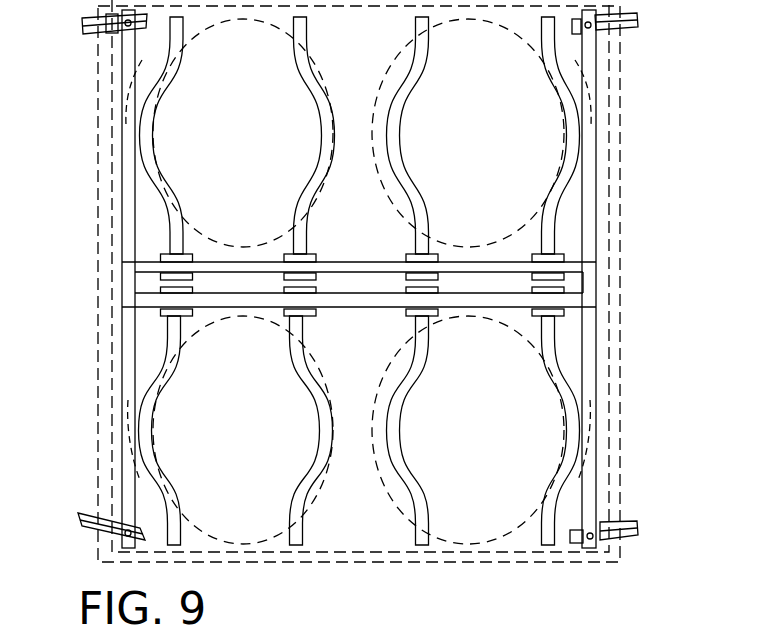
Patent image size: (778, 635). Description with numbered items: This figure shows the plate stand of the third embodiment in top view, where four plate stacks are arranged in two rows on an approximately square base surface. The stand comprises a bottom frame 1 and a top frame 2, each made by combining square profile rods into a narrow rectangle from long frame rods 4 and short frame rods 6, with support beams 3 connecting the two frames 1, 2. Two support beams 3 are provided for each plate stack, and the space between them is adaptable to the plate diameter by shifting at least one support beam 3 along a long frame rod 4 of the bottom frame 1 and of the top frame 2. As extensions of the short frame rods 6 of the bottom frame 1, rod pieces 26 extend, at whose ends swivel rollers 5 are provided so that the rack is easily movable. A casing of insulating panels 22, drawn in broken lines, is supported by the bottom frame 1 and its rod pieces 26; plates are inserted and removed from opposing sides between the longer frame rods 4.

The bottom frame 1 is at (604, 188).
The top frame 2 is at (365, 296).
The support beam 3 is at (597, 261).
The long frame rod 4 is at (143, 266).
The roller 5 is at (80, 522).
The short frame rod 6 is at (588, 290).
The insulating panel 22 is at (97, 172).
The rod piece 26 is at (142, 62).